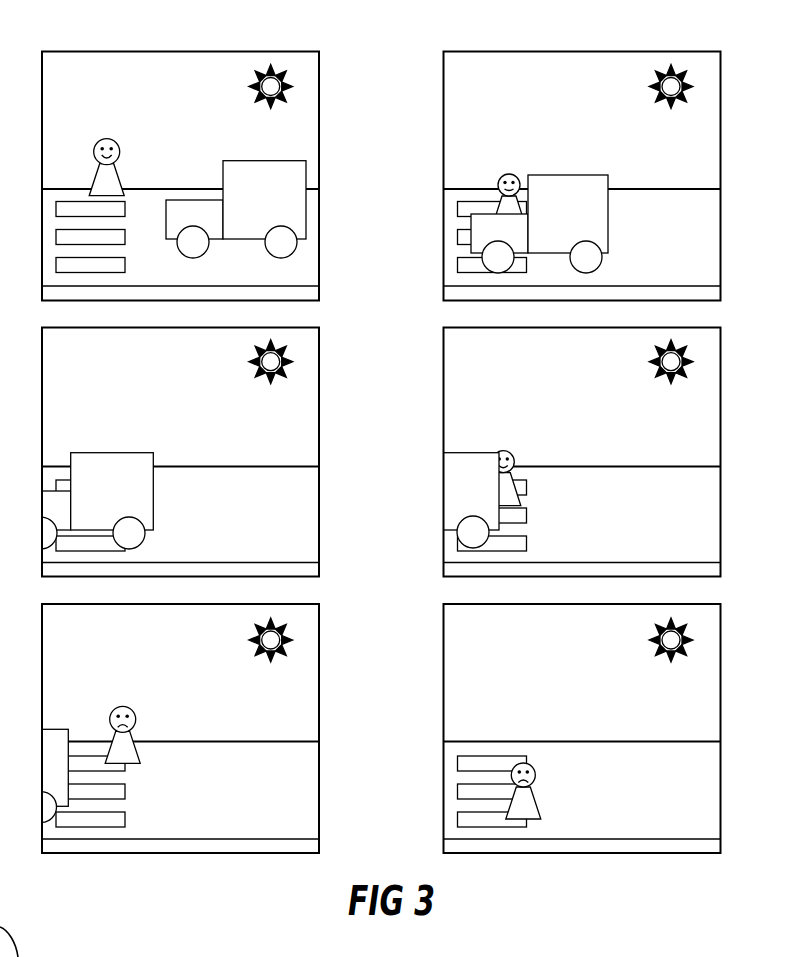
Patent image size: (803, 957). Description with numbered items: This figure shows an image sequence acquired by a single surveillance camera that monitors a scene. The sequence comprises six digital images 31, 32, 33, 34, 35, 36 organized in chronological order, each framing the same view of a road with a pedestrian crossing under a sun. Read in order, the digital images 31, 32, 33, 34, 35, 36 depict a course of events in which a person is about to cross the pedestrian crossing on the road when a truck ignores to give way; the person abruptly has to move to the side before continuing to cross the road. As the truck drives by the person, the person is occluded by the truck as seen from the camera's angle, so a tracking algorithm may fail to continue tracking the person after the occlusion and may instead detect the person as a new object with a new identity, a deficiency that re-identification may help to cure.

The digital image 31 is at (208, 158).
The digital image 32 is at (610, 153).
The digital image 33 is at (203, 452).
The digital image 34 is at (602, 452).
The digital image 35 is at (186, 728).
The digital image 36 is at (618, 728).